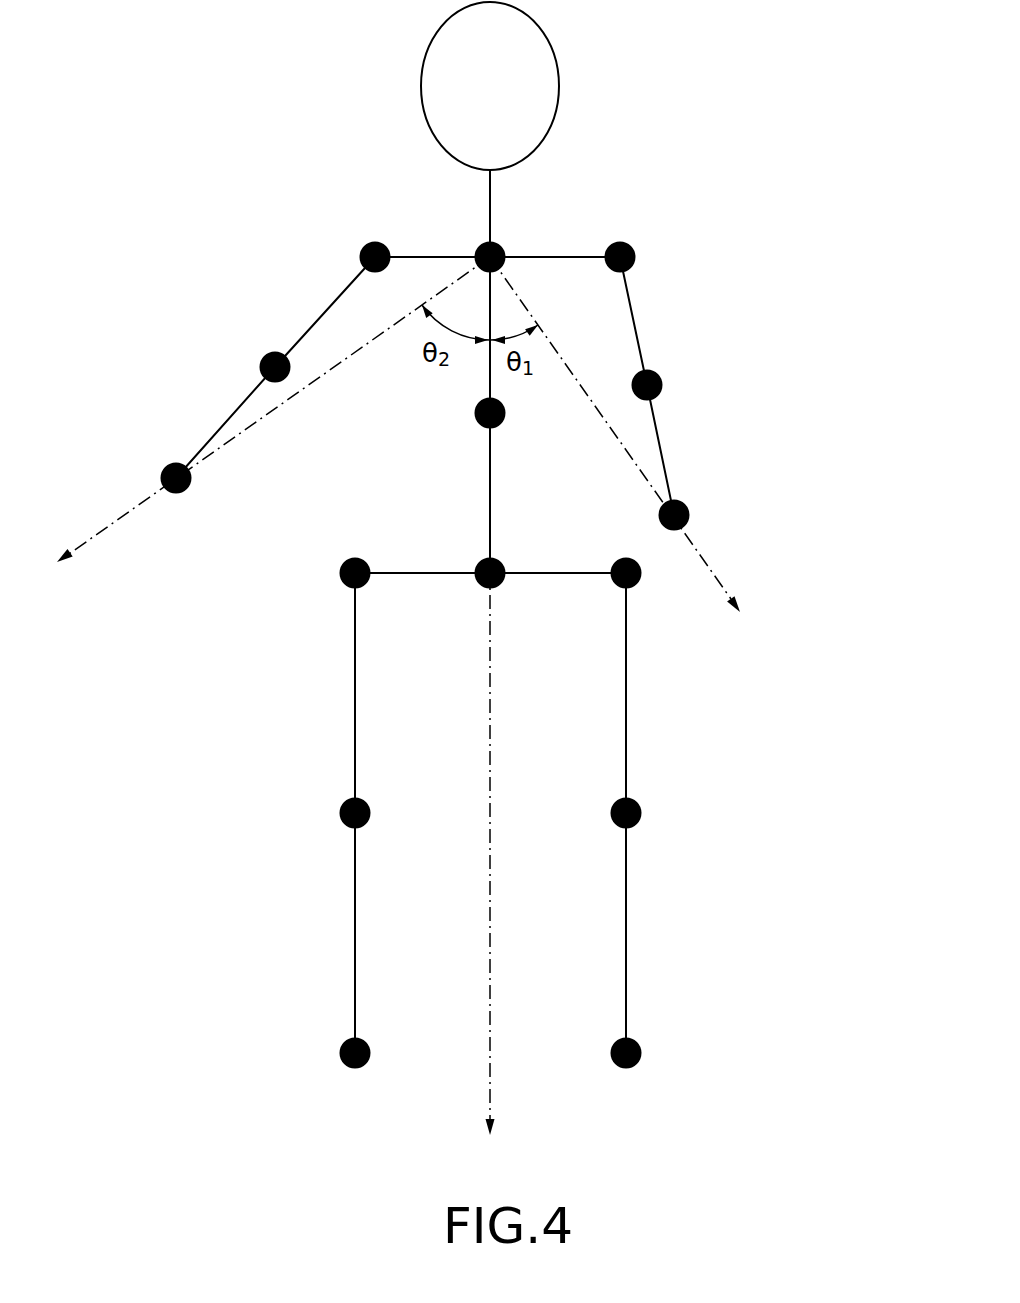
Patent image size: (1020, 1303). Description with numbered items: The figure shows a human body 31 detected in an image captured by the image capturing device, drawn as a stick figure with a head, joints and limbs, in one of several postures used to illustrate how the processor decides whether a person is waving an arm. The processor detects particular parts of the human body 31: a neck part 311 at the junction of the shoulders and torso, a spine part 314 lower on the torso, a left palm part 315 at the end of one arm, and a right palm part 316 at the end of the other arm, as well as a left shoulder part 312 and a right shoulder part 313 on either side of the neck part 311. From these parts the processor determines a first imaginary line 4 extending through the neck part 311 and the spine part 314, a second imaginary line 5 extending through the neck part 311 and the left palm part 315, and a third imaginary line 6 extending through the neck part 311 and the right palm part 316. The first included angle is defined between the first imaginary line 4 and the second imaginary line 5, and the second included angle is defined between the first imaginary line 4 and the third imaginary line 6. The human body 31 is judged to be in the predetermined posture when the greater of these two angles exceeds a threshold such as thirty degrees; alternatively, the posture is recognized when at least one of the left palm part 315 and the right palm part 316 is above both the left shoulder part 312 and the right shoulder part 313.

The human body 31 is at (456, 535).
The neck part 311 is at (506, 246).
The left shoulder part 312 is at (635, 246).
The right shoulder part 313 is at (368, 243).
The spine part 314 is at (507, 417).
The left palm part 315 is at (684, 499).
The right palm part 316 is at (170, 465).
The first imaginary line 4 is at (490, 933).
The second imaginary line 5 is at (707, 558).
The third imaginary line 6 is at (140, 502).